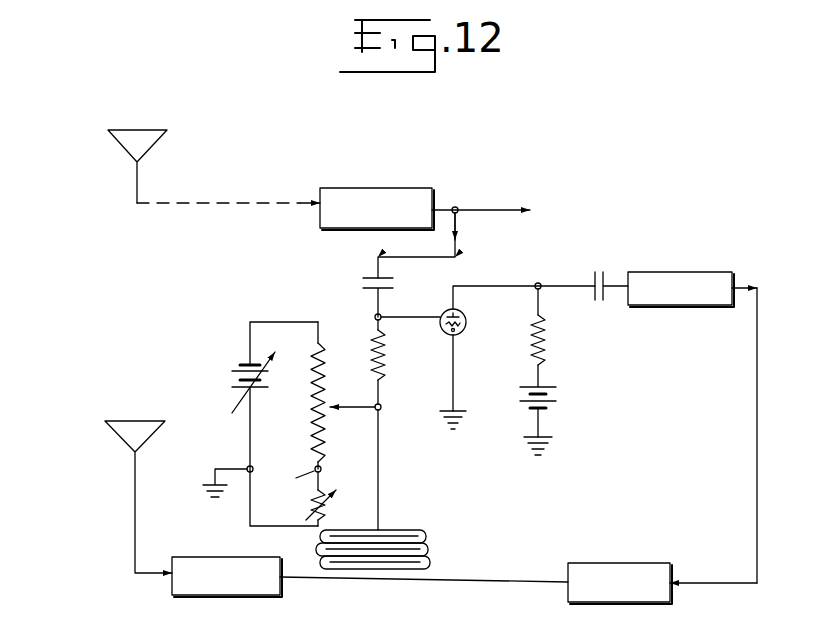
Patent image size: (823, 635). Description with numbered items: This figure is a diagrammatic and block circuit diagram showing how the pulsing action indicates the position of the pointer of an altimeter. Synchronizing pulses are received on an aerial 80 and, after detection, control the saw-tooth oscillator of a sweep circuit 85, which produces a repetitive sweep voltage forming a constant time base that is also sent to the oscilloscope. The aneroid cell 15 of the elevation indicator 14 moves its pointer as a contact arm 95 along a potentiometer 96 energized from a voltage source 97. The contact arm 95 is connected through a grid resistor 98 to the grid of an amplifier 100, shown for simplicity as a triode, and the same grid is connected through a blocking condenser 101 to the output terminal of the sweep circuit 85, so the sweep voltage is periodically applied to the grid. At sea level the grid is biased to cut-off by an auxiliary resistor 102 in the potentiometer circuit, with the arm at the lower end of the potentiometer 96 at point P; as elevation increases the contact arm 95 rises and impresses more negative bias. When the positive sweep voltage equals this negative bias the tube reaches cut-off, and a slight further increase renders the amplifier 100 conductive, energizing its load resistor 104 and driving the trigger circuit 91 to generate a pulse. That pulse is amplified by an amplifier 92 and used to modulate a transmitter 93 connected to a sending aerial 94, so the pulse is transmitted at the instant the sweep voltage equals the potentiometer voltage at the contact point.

The aerial 80 is at (214, 153).
The sweep circuit 85 is at (495, 232).
The blocking condenser 101 is at (395, 290).
The grid resistor 98 is at (394, 362).
The amplifier 100 is at (466, 318).
The load resistor 104 is at (550, 369).
The trigger circuit 91 is at (676, 416).
The amplifier 92 is at (662, 572).
The transmitter 93 is at (370, 565).
The sending aerial 94 is at (101, 483).
The voltage source 97 is at (260, 424).
The potentiometer 96 is at (320, 404).
The contact arm 95 is at (355, 402).
The auxiliary resistor 102 is at (330, 510).
The elevation indicator 14 is at (420, 497).
The aneroid cell 15 is at (430, 551).